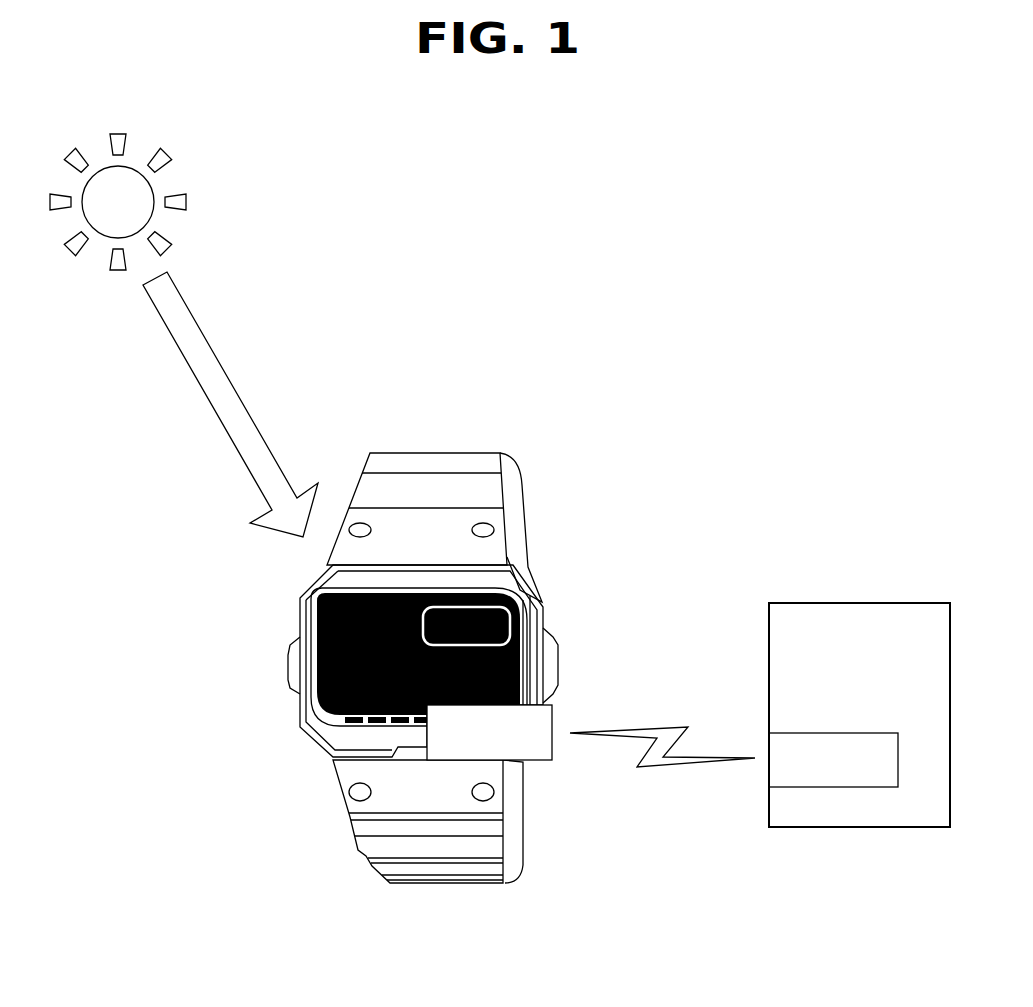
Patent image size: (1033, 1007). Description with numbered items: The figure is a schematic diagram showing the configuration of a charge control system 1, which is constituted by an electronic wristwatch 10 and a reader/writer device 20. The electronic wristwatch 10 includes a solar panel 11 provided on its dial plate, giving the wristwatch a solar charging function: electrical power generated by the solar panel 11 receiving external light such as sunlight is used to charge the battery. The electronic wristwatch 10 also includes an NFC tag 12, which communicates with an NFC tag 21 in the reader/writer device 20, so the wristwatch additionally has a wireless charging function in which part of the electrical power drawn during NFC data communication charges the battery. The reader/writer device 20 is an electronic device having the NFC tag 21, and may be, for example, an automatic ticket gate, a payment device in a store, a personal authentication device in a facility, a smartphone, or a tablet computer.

The charge control system 1 is at (748, 366).
The electronic wristwatch 10 is at (480, 453).
The solar panel 11 is at (318, 603).
The NFC tag 12 is at (554, 709).
The reader/writer device 20 is at (853, 602).
The NFC tag 21 is at (797, 732).